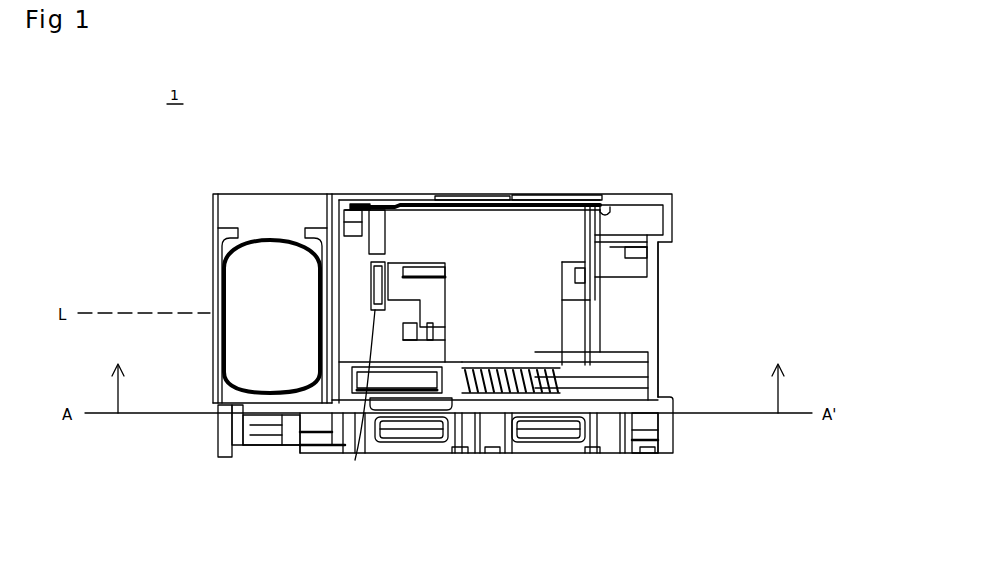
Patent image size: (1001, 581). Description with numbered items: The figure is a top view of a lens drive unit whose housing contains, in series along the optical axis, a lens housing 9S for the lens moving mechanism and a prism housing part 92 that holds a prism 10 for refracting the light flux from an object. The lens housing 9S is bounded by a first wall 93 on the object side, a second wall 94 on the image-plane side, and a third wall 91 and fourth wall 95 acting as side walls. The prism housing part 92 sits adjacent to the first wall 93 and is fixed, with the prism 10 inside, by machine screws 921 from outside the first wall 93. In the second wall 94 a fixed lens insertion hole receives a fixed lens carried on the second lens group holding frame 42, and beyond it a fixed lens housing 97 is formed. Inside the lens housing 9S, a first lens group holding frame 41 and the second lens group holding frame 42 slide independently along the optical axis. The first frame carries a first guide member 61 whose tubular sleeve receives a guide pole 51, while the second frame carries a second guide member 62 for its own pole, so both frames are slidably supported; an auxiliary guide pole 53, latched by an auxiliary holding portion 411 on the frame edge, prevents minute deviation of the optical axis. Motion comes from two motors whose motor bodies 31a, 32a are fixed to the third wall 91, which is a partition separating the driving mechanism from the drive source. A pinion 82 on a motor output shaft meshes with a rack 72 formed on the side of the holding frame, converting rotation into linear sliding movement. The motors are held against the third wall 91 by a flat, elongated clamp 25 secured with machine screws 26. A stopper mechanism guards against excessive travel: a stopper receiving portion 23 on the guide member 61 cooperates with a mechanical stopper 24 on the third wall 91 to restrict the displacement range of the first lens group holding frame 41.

The prism 10 is at (228, 270).
The prism housing part 92 is at (223, 203).
The machine screws 921 is at (220, 413).
The first wall 93 is at (338, 208).
The second wall 94 is at (672, 210).
The fourth wall 95 is at (463, 200).
The fixed lens housing 97 is at (655, 280).
The lens housing 9S is at (557, 237).
The auxiliary guide pole 53 is at (520, 212).
The second guide member 62 is at (500, 206).
The first lens group holding frame 41 is at (395, 208).
The auxiliary holding portion 411 is at (362, 205).
The second lens group holding frame 42 is at (592, 325).
The guide pole 51 is at (600, 372).
The third wall 91 is at (636, 408).
The stopper receiving portion 23 is at (350, 392).
The first guide member 61 is at (392, 443).
The machine screws 26 is at (320, 450).
The mechanical stopper 24 is at (452, 443).
The pinion 82 is at (512, 445).
The rack 72 is at (548, 443).
The clamp 25 is at (600, 453).
The motor body 31a is at (412, 440).
The motor body 32a is at (572, 445).